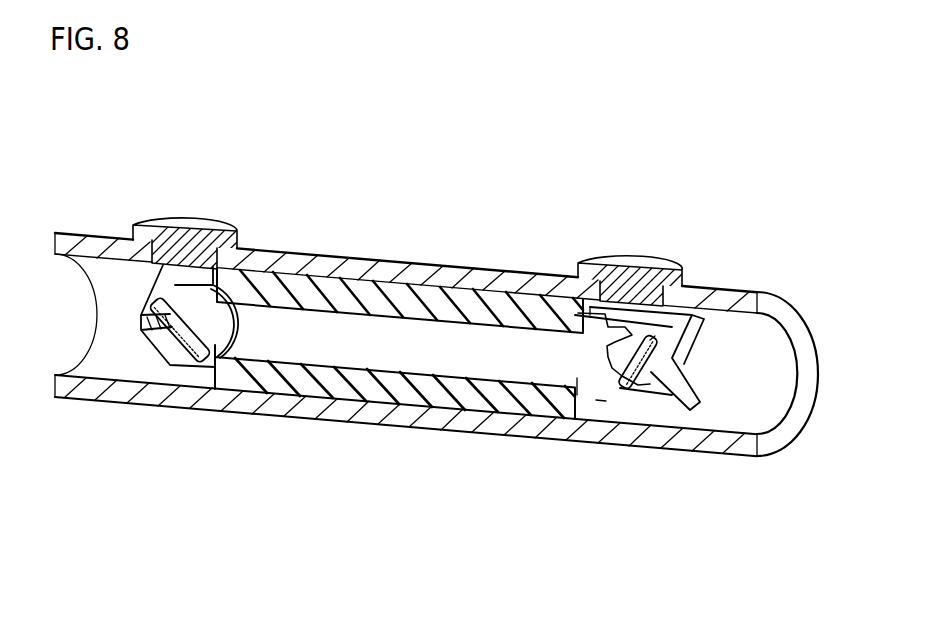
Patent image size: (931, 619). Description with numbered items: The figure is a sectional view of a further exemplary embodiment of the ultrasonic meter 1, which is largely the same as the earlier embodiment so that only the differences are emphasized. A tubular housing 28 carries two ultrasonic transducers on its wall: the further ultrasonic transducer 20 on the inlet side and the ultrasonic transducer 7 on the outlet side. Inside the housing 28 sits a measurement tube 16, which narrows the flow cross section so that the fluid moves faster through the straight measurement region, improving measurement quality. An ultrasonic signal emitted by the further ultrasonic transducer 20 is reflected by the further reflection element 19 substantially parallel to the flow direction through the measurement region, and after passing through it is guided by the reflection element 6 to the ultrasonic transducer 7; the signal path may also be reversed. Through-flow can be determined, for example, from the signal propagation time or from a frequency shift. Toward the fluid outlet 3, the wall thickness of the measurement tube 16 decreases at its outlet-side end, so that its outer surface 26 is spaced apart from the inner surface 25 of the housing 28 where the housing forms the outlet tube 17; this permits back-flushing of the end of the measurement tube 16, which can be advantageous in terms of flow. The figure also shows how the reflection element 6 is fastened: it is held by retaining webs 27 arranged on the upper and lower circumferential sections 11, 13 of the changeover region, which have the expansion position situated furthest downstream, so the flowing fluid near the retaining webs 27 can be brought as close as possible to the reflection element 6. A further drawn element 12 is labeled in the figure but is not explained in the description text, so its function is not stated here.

The ultrasonic meter 1 is at (410, 215).
The fluid outlet 3 is at (834, 358).
The reflection element 6 is at (648, 373).
The ultrasonic transducer 7 is at (630, 280).
The upper circumferential section 11 is at (626, 325).
The valve flap 12 is at (612, 358).
The lower circumferential section 13 is at (622, 392).
The measurement tube 16 is at (355, 382).
The outlet tube 17 is at (752, 366).
The further reflection element 19 is at (183, 337).
The further ultrasonic transducer 20 is at (176, 238).
The inner surface 25 is at (597, 416).
The outer surface 26 is at (582, 420).
The retaining webs 27 is at (668, 322).
The housing 28 is at (277, 262).